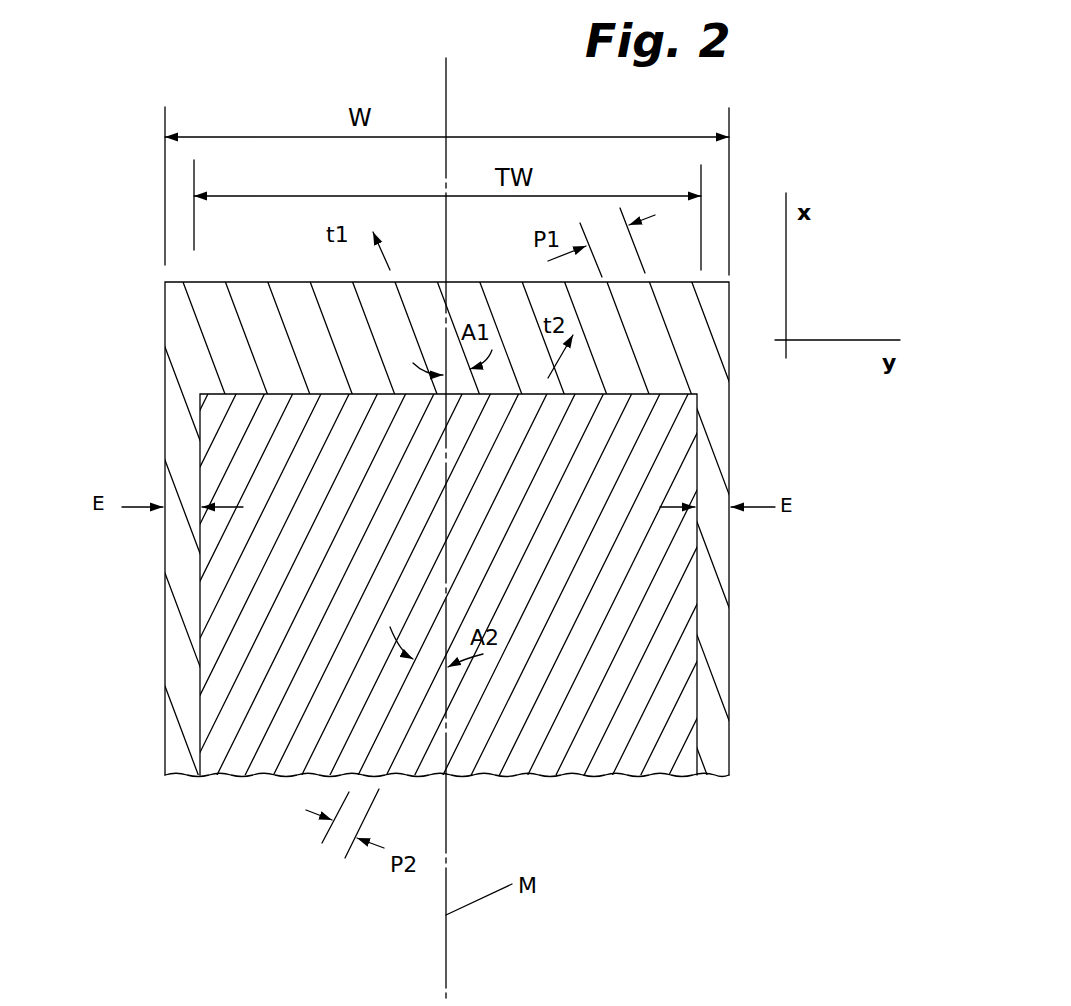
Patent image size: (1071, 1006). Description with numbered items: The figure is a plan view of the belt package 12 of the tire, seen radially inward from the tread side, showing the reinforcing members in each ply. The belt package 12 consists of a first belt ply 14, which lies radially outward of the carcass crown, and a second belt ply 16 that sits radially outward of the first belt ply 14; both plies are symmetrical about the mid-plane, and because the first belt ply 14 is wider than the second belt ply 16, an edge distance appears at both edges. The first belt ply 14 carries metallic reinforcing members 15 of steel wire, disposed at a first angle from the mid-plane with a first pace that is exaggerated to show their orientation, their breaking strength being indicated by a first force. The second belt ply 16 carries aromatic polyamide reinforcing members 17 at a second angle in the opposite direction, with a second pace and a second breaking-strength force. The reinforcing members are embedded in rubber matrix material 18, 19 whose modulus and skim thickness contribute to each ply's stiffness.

The belt package 12 is at (133, 298).
The first belt ply 14 is at (219, 318).
The metallic reinforcing members 15 is at (213, 362).
The second belt ply 16 is at (259, 727).
The aromatic polyamide reinforcing members 17 is at (265, 675).
The rubber matrix material 18 is at (708, 621).
The rubber matrix material 19 is at (669, 677).